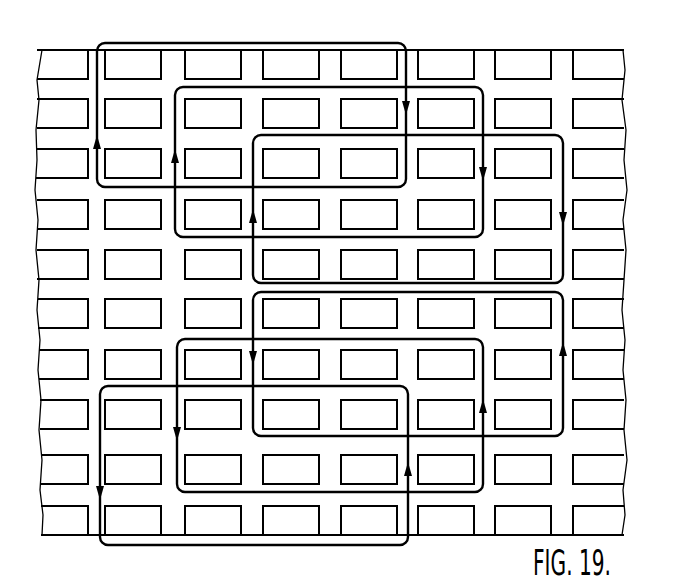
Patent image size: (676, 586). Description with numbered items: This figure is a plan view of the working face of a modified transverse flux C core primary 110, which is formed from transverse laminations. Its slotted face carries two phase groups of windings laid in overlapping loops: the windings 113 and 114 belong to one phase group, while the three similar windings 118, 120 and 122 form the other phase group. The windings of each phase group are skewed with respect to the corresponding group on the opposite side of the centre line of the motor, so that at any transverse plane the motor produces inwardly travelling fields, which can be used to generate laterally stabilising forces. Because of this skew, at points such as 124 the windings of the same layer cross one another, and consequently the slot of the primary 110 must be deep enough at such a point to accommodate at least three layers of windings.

The primary 110 is at (563, 58).
The winding 113 is at (125, 44).
The winding 114 is at (418, 84).
The crossing point 124 is at (492, 121).
The winding 122 is at (563, 434).
The winding 120 is at (483, 493).
The winding 118 is at (295, 545).